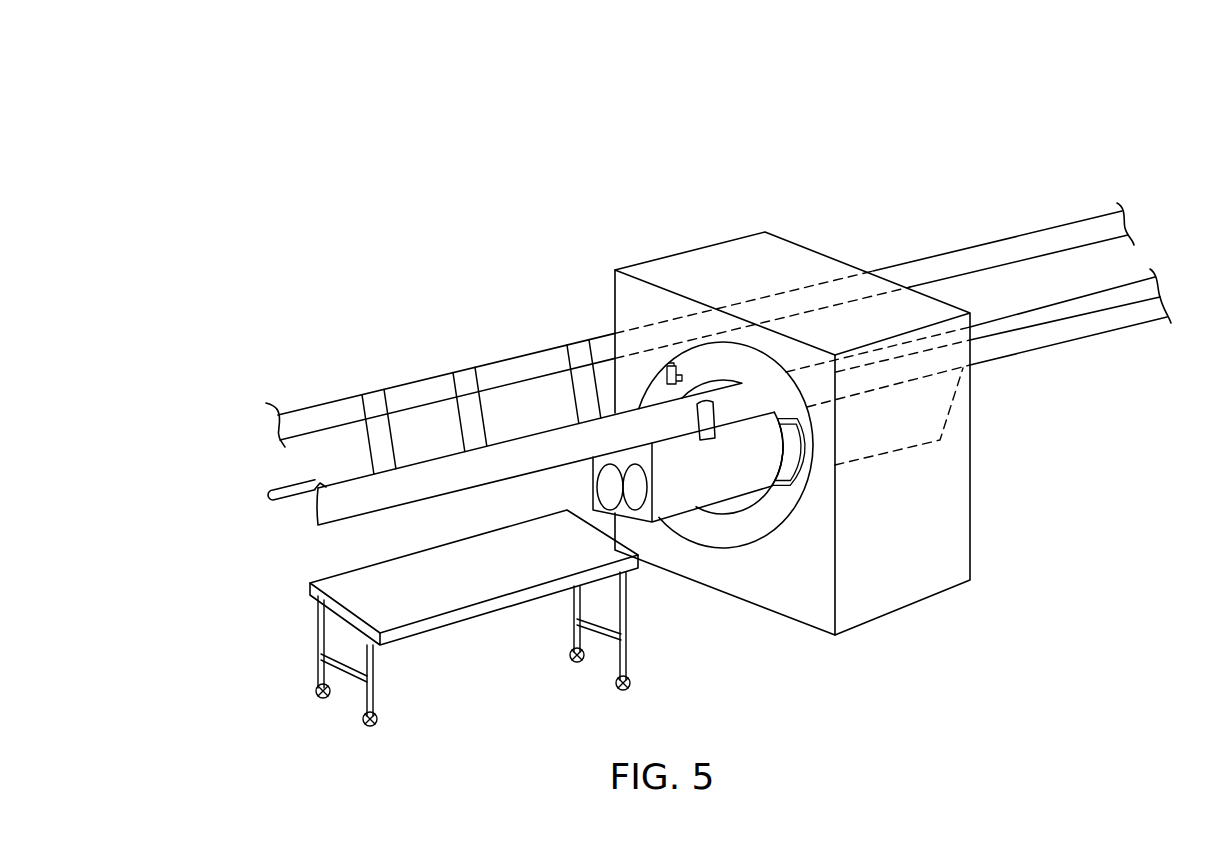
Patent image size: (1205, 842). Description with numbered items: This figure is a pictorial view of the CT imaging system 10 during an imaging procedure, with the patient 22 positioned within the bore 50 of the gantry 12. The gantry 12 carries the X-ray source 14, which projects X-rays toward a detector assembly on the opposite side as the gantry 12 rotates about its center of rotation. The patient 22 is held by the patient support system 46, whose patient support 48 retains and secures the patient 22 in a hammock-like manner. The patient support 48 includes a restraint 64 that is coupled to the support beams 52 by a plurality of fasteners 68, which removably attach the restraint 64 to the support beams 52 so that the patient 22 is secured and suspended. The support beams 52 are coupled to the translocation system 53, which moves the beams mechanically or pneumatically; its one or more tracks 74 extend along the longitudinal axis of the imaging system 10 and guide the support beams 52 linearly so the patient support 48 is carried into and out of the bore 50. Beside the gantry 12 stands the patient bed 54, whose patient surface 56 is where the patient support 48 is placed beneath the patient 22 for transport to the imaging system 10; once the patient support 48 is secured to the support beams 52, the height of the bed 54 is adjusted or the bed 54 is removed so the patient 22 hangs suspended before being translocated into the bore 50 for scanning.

The CT imaging system 10 is at (1014, 85).
The gantry 12 is at (709, 539).
The X-ray source 14 is at (681, 371).
The patient 22 is at (607, 487).
The patient support system 46 is at (314, 383).
The patient support 48 is at (1004, 396).
The bore 50 is at (746, 512).
The support beams 52 is at (322, 505).
The translocation system 53 is at (258, 431).
The patient bed 54 is at (318, 600).
The patient surface 56 is at (455, 578).
The restraint 64 is at (718, 474).
The fasteners 68 is at (698, 422).
The tracks 74 is at (407, 384).